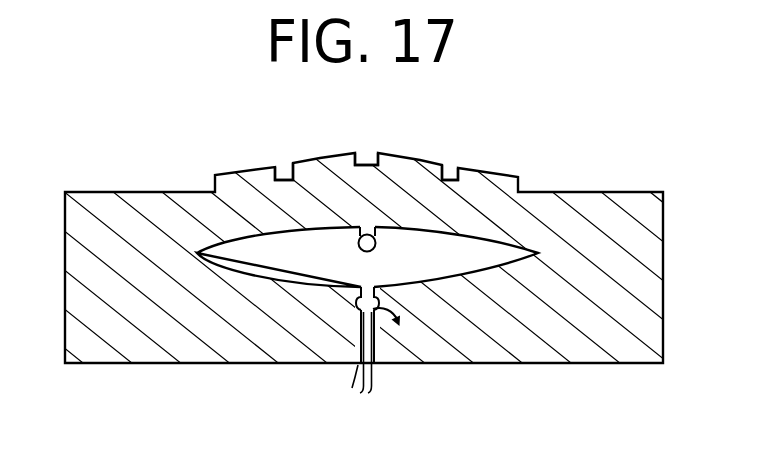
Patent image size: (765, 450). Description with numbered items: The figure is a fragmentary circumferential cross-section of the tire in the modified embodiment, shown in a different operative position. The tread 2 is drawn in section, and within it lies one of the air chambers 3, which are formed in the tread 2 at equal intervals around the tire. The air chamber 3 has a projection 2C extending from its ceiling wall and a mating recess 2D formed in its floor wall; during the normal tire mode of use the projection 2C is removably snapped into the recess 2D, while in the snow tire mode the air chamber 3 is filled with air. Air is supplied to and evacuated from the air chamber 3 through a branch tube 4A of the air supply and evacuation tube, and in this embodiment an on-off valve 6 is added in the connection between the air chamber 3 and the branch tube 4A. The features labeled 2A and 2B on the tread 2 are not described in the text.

The tread 2 is at (623, 222).
The central positioning groove 2A is at (368, 164).
The positioning grooves 2B is at (257, 168).
The projection 2C is at (370, 251).
The recess 2D is at (358, 307).
The air chamber 3 is at (478, 257).
The branch tube 4A is at (370, 333).
The on-off valve 6 is at (356, 314).